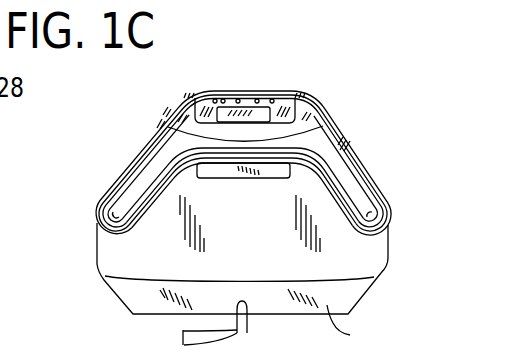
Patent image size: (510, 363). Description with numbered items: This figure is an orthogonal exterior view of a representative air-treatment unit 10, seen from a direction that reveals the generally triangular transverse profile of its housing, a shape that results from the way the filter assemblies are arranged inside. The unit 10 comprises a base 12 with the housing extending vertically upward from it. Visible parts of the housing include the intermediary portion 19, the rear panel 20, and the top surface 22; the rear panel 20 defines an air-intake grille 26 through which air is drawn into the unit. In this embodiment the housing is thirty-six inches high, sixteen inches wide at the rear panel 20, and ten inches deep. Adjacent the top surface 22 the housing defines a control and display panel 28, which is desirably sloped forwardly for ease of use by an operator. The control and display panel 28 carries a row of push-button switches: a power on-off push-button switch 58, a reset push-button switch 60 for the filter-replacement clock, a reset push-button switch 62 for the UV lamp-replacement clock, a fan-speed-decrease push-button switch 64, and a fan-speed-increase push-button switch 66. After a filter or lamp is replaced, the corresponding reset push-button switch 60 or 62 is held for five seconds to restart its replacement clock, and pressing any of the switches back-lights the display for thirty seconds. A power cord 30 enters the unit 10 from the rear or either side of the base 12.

The air-treatment unit 10 is at (120, 135).
The base 12 is at (350, 335).
The intermediary portion 19 is at (135, 185).
The rear panel 20 is at (147, 279).
The top surface 22 is at (254, 239).
The air-intake grille 26 is at (210, 283).
The control and display panel 28 is at (293, 107).
The power cord 30 is at (247, 333).
The power on-off push-button switch 58 is at (272, 99).
The reset push-button switch for the filter-replacement clock 60 is at (257, 99).
The reset push-button switch for the UV lamp-replacement clock 62 is at (238, 99).
The fan-speed-decrease push-button switch 64 is at (223, 99).
The fan-speed-increase push-button switch 66 is at (215, 99).